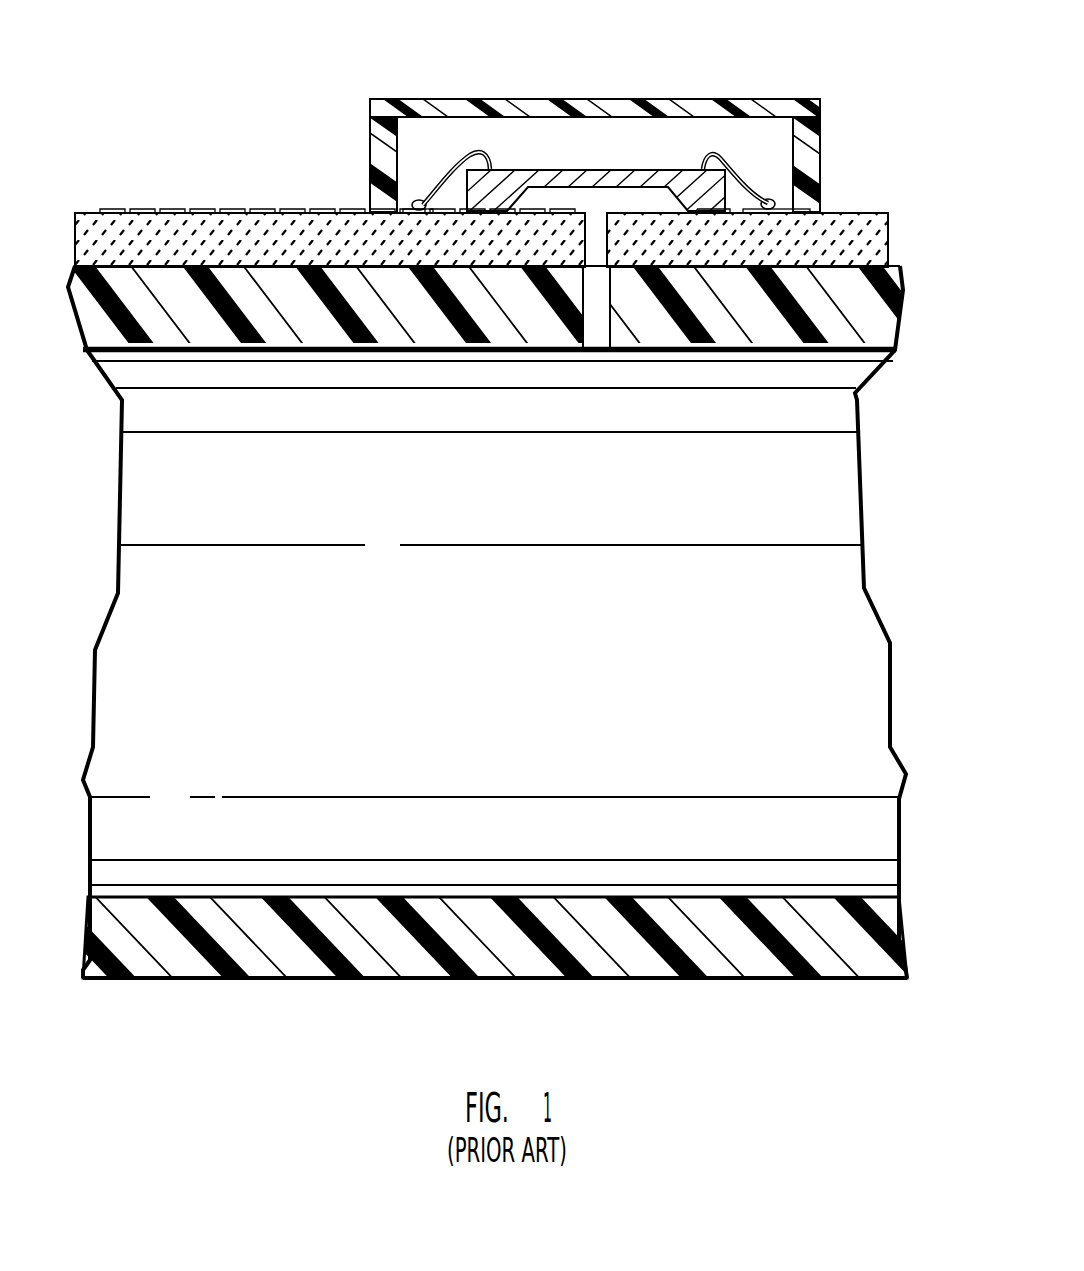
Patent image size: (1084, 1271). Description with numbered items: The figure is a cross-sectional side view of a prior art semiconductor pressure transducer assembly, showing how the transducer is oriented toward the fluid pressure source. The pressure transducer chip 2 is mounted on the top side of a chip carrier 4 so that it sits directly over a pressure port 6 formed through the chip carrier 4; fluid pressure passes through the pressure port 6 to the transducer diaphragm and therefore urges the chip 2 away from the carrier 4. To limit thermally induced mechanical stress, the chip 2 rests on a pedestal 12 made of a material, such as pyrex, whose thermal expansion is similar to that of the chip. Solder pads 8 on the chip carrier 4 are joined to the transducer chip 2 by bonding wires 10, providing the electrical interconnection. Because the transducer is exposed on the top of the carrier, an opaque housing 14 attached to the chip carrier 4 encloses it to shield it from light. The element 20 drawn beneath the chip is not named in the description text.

The semiconductor chip 2 is at (630, 170).
The substrate 4 is at (890, 228).
The conductive trace 6 is at (610, 227).
The bonding pads 8 is at (413, 203).
The bond wires 10 is at (488, 160).
The sidewall of lid 12 is at (795, 117).
The lid 14 is at (607, 99).
The die attach 20 is at (506, 210).